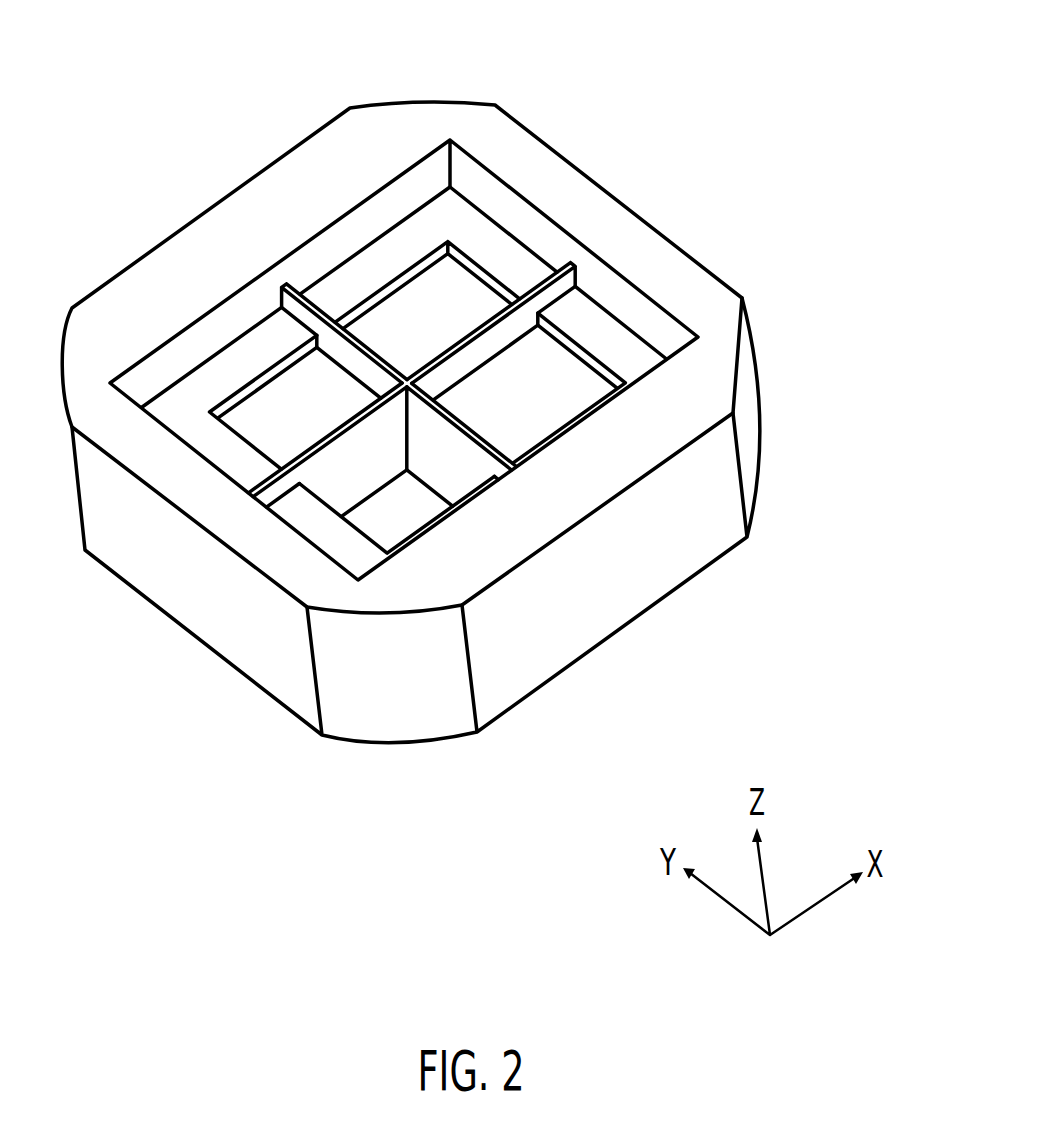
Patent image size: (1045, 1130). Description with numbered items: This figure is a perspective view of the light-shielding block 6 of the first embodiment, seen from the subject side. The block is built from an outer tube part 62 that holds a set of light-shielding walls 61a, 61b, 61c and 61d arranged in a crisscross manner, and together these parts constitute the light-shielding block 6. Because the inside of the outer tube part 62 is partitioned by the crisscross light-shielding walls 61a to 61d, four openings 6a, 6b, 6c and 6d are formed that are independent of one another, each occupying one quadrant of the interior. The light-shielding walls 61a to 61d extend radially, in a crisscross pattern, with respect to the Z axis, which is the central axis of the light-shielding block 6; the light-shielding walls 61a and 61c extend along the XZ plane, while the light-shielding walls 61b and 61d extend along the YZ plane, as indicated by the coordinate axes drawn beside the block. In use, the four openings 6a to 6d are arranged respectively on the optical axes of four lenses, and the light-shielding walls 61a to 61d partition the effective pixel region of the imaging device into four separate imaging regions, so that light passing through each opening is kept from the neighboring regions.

The light-shielding block 6 is at (460, 426).
The opening 6a is at (428, 295).
The opening 6b is at (540, 390).
The opening 6c is at (273, 410).
The opening 6d is at (380, 505).
The light-shielding wall 61a is at (537, 347).
The light-shielding wall 61b is at (323, 367).
The light-shielding wall 61c is at (342, 483).
The light-shielding wall 61d is at (443, 460).
The outer tube part 62 is at (467, 563).